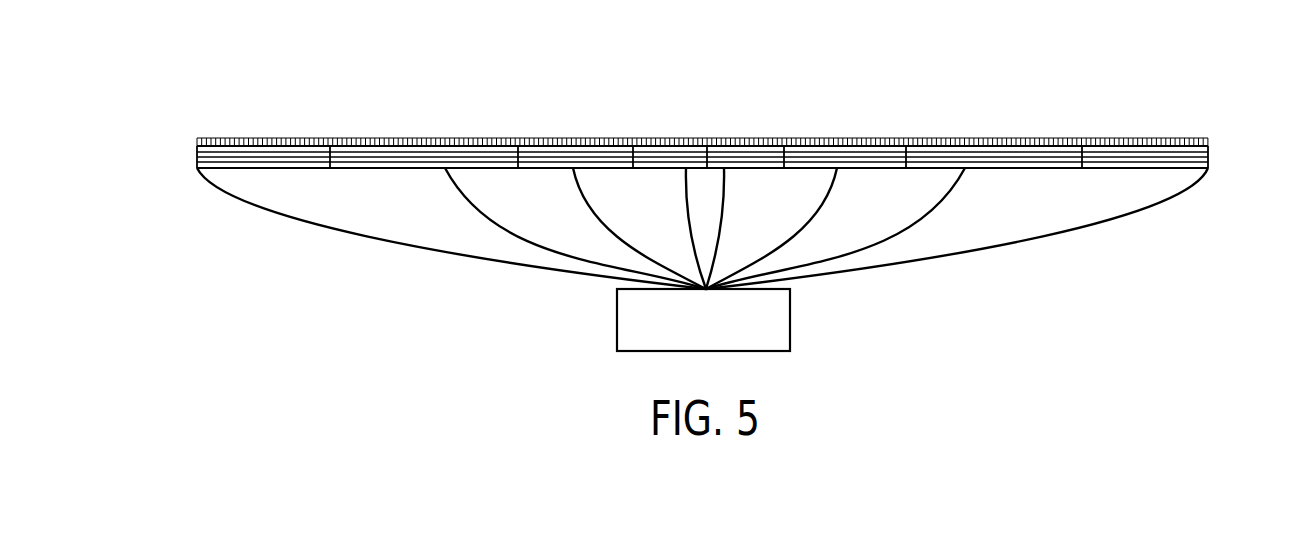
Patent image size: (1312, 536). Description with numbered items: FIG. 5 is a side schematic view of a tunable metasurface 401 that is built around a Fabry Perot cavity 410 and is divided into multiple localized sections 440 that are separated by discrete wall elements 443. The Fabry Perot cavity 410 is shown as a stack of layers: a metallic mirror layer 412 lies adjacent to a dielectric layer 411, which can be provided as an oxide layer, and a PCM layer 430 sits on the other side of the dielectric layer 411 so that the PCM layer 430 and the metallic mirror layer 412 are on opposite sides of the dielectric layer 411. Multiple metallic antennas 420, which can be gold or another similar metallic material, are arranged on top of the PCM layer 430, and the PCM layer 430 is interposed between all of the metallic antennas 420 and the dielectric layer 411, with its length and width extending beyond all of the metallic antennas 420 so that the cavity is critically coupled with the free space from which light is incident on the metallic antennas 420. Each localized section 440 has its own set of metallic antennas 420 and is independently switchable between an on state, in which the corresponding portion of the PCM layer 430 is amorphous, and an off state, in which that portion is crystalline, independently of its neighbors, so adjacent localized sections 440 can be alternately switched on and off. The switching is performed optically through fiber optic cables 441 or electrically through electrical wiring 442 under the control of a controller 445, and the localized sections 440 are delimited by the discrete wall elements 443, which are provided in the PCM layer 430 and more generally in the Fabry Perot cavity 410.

The tunable metasurface 401 is at (176, 121).
The Fabry Perot cavity 410 is at (190, 168).
The dielectric layer 411 is at (1208, 157).
The metallic mirror layer 412 is at (1208, 168).
The metallic antennas 420 is at (1023, 138).
The PCM layer 430 is at (1208, 147).
The localized sections 440 is at (1054, 209).
The fiber optic cables 441 is at (497, 222).
The electrical wiring 442 is at (720, 245).
The discrete wall elements 443 is at (333, 150).
The controller 445 is at (690, 335).